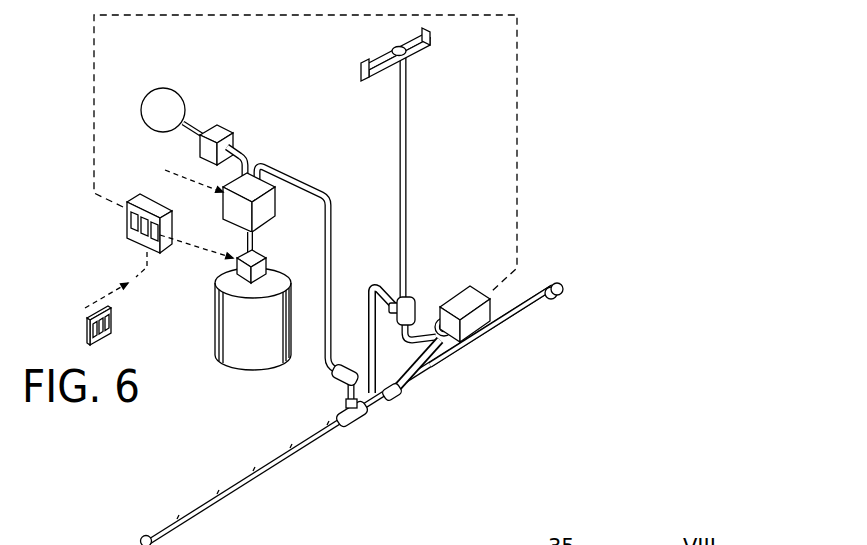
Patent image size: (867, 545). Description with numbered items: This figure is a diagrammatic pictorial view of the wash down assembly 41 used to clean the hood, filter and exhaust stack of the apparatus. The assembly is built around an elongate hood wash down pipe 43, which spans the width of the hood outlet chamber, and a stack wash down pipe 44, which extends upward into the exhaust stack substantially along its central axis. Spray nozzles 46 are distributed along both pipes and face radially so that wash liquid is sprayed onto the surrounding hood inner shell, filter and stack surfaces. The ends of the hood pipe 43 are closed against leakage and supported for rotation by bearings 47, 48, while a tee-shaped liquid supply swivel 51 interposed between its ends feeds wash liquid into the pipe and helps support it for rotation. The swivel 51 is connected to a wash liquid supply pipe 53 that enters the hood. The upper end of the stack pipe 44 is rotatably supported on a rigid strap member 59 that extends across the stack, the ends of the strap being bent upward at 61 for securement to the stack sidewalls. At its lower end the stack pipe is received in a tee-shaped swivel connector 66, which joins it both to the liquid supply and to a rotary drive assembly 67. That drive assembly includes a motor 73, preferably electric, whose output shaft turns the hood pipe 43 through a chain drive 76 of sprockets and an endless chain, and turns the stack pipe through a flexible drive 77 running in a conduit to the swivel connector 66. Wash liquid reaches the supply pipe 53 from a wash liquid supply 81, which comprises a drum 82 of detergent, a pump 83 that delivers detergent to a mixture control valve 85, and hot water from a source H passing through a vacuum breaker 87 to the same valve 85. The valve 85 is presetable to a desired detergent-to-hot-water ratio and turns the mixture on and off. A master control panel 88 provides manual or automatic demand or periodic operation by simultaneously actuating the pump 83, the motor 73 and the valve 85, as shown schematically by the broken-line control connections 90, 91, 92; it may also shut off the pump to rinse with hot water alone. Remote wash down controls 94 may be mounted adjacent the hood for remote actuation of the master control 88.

The wash down assembly 41 is at (428, 219).
The hood wash down pipe 43 is at (495, 332).
The stack wash down pipe 44 is at (406, 154).
The spray nozzles 46 is at (267, 467).
The bearing 47 is at (145, 539).
The bearing 48 is at (561, 291).
The liquid supply swivel 51 is at (352, 428).
The wash liquid supply pipe 53 is at (328, 240).
The strap member 59 is at (420, 52).
The bent-up strap ends 61 is at (431, 36).
The swivel connector 66 is at (411, 310).
The rotary drive assembly 67 is at (432, 382).
The motor 73 is at (471, 297).
The chain drive 76 is at (440, 350).
The flexible drive 77 is at (437, 318).
The wash liquid supply 81 is at (246, 116).
The drum 82 is at (233, 330).
The pump 83 is at (243, 268).
The mixture control valve 85 is at (263, 210).
The vacuum breaker 87 is at (217, 128).
The master control panel 88 is at (127, 230).
The control connection 90 is at (159, 271).
The control connection 91 is at (92, 103).
The control connection 92 is at (179, 175).
The wash down controls 94 is at (87, 321).